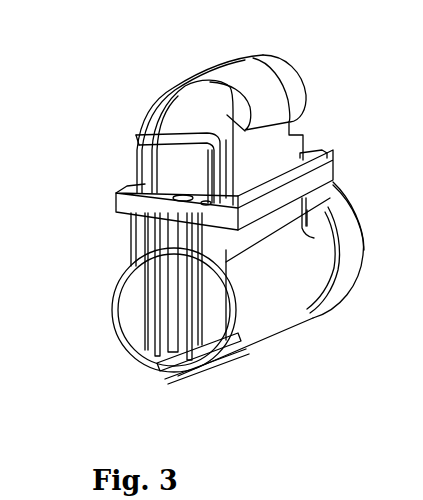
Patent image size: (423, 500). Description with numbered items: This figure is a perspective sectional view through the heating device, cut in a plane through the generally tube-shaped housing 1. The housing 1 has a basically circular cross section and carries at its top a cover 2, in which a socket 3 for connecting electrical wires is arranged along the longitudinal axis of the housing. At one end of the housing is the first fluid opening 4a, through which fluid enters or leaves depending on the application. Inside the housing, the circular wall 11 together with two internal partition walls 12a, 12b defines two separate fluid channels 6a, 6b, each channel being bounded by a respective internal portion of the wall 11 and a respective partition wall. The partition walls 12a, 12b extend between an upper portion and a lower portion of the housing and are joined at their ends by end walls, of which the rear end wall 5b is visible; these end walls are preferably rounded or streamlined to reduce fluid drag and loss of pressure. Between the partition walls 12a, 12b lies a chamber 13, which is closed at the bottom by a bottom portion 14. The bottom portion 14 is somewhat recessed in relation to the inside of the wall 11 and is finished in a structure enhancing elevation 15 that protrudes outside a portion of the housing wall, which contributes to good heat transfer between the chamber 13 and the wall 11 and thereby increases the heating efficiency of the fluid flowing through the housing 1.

The housing 1 is at (318, 299).
The cover 2 is at (187, 79).
The socket 3 is at (270, 53).
The first fluid opening 4a is at (364, 221).
The end wall 5b is at (363, 293).
The fluid channel 6a is at (130, 298).
The fluid channel 6b is at (219, 328).
The wall 11 is at (116, 274).
The internal partition wall 12a is at (152, 321).
The internal partition wall 12b is at (194, 315).
The chamber 13 is at (170, 271).
The bottom portion 14 is at (172, 366).
The structure enhancing elevation 15 is at (172, 389).